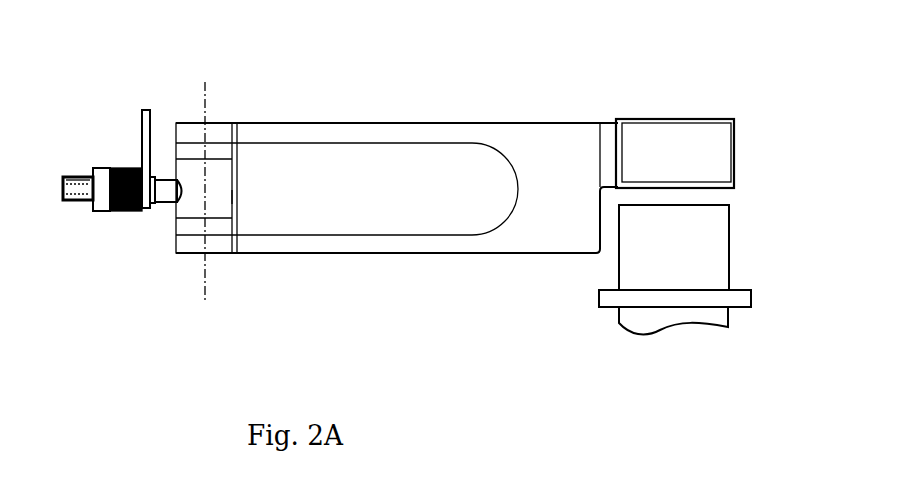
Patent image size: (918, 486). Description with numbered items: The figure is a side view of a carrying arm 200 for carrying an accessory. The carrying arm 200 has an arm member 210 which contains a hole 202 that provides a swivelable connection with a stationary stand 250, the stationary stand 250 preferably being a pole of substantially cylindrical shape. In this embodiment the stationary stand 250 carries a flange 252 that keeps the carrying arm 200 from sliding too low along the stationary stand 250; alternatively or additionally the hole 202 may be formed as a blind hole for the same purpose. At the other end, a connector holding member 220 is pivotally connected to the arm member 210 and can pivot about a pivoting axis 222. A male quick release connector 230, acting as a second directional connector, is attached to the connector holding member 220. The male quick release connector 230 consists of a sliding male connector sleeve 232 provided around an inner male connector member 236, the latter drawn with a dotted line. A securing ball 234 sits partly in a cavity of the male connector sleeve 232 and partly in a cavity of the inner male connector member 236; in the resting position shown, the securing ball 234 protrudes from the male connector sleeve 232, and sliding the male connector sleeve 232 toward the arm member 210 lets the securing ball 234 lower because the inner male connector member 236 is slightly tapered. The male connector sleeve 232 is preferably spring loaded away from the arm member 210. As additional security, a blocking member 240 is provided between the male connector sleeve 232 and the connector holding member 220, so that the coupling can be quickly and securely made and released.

The carrying arm 200 is at (402, 78).
The hole 202 is at (668, 119).
The arm member 210 is at (328, 123).
The connector holding member 220 is at (232, 197).
The pivoting axis 222 is at (205, 82).
The male quick release connector 230 is at (133, 237).
The male connector sleeve 232 is at (112, 211).
The securing ball 234 is at (88, 177).
The inner male connector member 236 is at (83, 203).
The blocking member 240 is at (143, 111).
The stationary stand 250 is at (622, 322).
The flange 252 is at (600, 295).